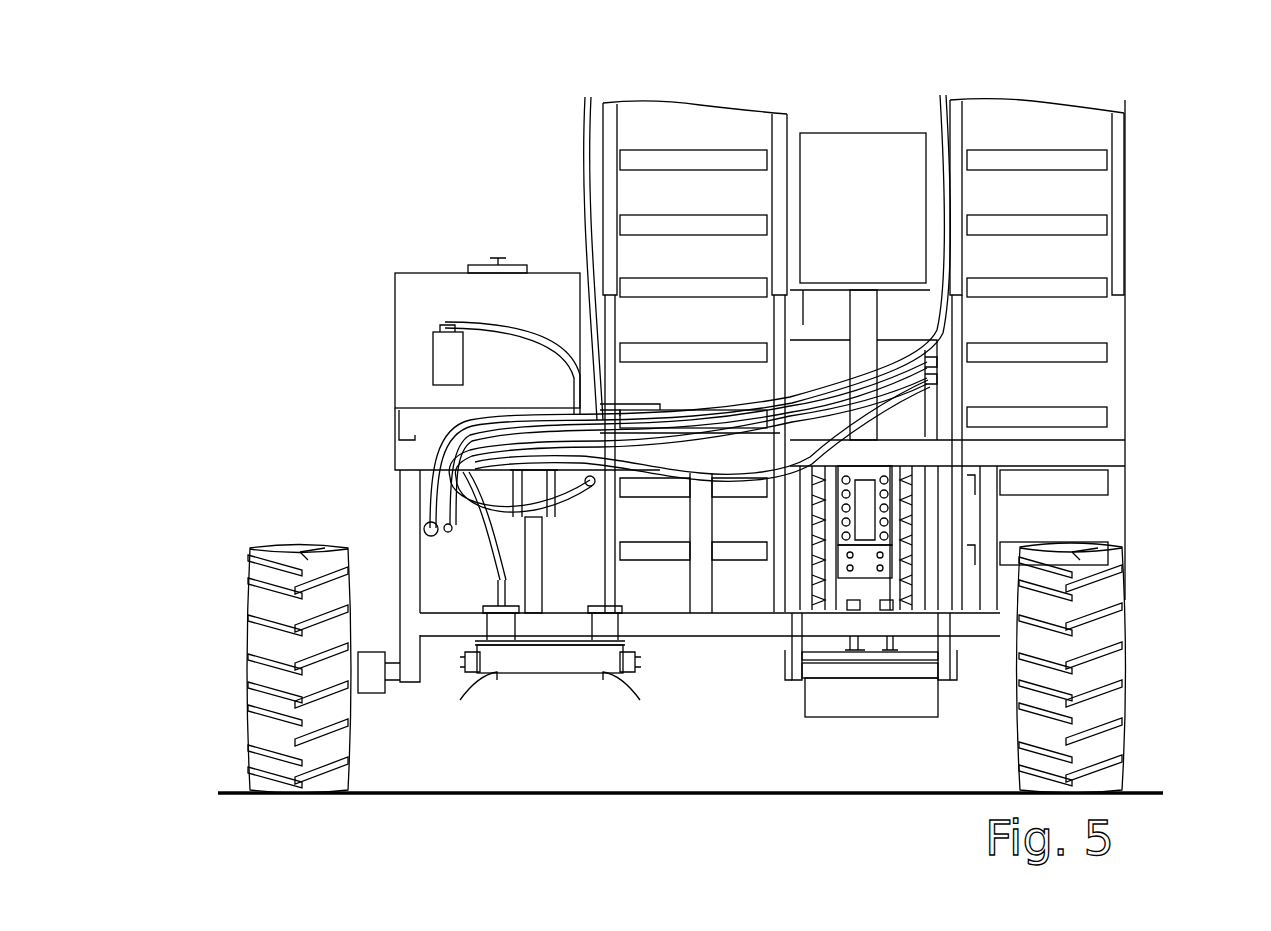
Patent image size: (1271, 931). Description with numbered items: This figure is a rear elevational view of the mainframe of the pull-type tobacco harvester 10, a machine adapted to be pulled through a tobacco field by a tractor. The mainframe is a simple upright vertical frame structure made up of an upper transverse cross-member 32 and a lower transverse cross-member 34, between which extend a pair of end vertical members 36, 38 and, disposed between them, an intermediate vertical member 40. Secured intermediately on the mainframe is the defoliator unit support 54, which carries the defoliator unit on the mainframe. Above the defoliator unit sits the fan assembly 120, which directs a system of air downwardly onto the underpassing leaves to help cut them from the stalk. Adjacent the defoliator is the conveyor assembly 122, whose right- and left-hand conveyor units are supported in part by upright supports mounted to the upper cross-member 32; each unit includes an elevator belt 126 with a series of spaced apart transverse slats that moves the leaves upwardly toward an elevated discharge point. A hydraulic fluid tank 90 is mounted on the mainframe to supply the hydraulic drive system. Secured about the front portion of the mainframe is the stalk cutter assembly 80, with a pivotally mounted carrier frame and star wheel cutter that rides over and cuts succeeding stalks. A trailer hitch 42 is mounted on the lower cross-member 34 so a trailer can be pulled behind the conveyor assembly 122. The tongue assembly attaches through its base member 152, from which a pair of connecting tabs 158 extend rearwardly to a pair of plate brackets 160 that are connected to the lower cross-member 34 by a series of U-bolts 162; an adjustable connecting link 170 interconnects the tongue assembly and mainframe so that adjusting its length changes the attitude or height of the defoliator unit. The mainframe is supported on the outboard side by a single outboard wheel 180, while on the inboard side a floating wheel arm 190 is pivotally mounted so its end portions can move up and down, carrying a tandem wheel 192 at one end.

The pull-type tobacco harvester 10 is at (329, 130).
The conveyor assembly 122 is at (1172, 100).
The elevator belt 126 is at (732, 257).
The fan assembly 120 is at (906, 193).
The hydraulic fluid tank 90 is at (535, 300).
The defoliator unit support 54 is at (866, 312).
The upper transverse cross-member 32 is at (1105, 452).
The end vertical member 36 is at (985, 512).
The end vertical member 38 is at (405, 487).
The tandem wheel 192 is at (253, 600).
The outboard wheel 180 is at (1110, 735).
The floating wheel arm 190 is at (372, 693).
The adjustable connecting link 170 is at (535, 548).
The U-bolts 162 is at (487, 625).
The connecting tabs 158 is at (472, 672).
The base member 152 is at (520, 672).
The plate brackets 160 is at (497, 680).
The intermediate vertical member 40 is at (692, 585).
The lower transverse cross-member 34 is at (715, 627).
The trailer hitch 42 is at (845, 640).
The stalk cutter assembly 80 is at (845, 705).